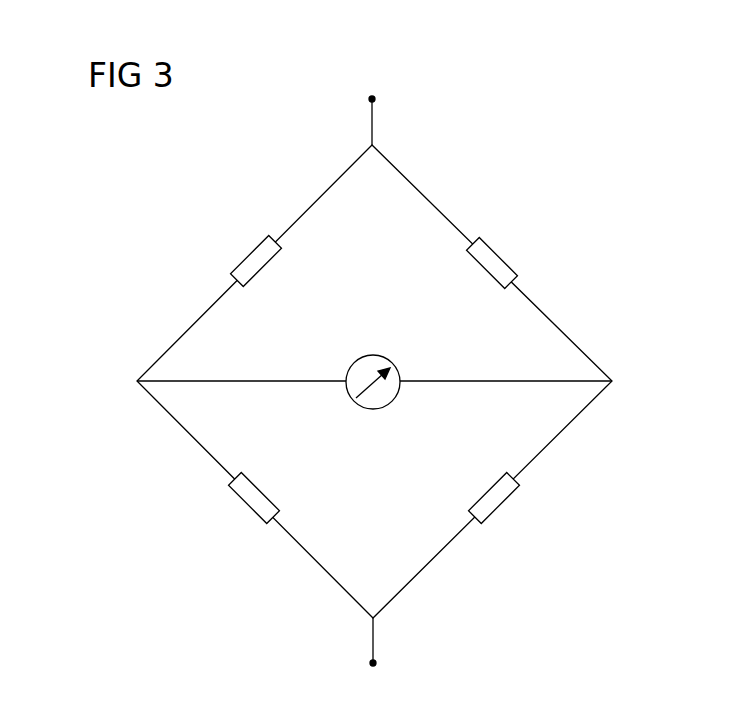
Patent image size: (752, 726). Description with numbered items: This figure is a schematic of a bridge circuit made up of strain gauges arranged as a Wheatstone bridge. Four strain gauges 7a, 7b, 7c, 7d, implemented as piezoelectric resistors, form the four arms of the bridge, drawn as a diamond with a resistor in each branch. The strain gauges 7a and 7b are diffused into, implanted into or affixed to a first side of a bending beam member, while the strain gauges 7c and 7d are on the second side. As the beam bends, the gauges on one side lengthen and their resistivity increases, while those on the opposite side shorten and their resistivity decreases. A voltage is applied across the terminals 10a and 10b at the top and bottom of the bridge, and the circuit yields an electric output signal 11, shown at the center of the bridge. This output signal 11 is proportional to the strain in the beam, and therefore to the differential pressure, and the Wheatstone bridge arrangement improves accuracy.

The terminal 10a is at (399, 108).
The terminal 10b is at (400, 651).
The strain gauge 7a is at (250, 256).
The strain gauge 7b is at (500, 511).
The strain gauge 7c is at (247, 511).
The strain gauge 7d is at (499, 255).
The electric output signal 11 is at (373, 355).